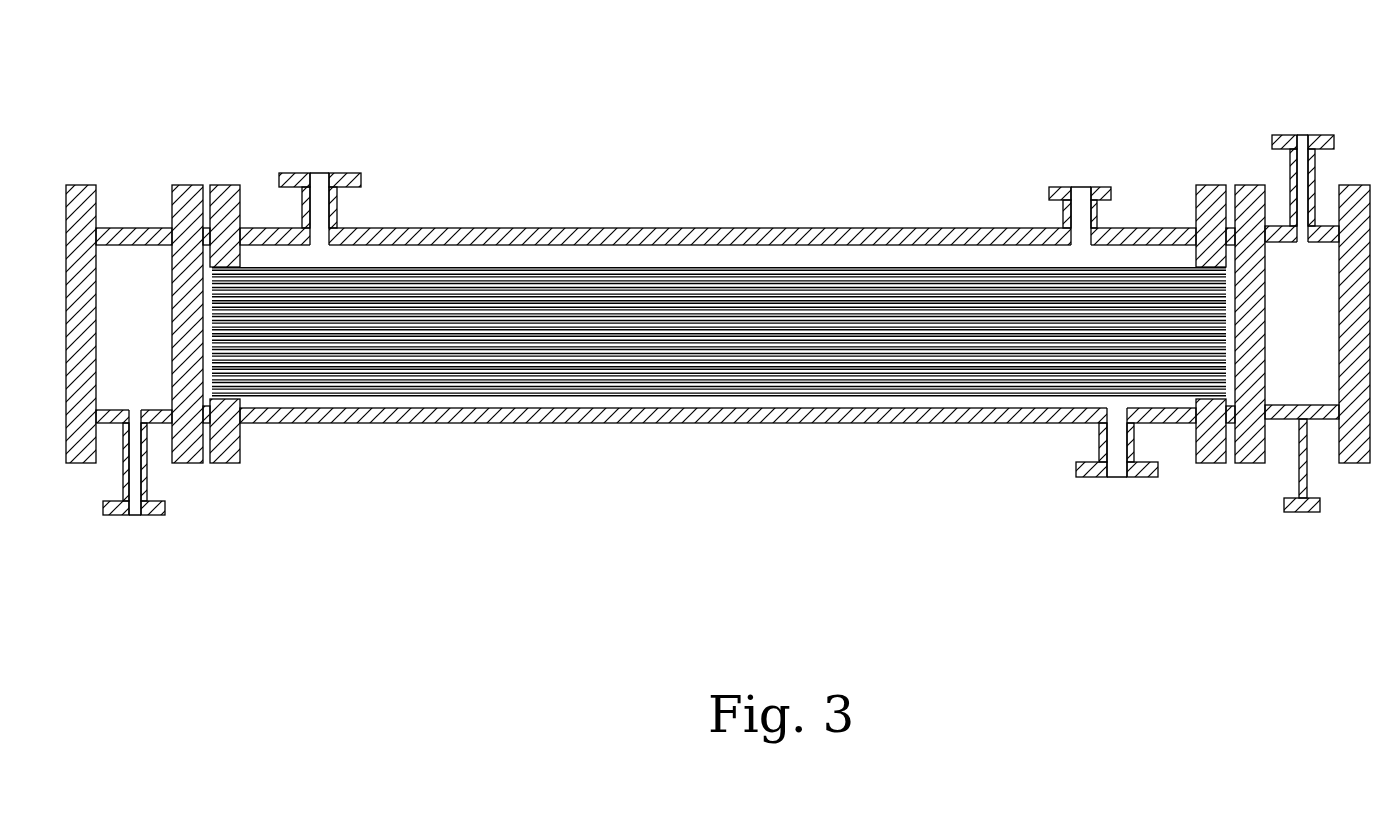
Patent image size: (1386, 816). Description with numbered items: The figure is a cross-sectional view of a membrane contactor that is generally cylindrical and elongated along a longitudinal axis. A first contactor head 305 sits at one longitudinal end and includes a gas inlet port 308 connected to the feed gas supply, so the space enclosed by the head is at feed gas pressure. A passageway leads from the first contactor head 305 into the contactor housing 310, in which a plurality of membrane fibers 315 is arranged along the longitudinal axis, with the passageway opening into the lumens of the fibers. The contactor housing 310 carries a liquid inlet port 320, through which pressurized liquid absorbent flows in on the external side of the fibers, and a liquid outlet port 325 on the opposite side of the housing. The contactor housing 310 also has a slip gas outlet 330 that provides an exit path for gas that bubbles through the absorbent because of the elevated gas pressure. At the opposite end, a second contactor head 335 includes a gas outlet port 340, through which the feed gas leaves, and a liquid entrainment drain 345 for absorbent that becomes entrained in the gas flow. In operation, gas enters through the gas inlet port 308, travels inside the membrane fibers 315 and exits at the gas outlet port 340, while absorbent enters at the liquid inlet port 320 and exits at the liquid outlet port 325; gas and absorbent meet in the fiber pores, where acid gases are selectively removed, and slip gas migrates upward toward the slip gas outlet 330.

The first contactor head 305 is at (122, 228).
The gas inlet port 308 is at (132, 515).
The contactor housing 310 is at (473, 228).
The membrane fibers 315 is at (597, 403).
The liquid inlet port 320 is at (322, 173).
The liquid outlet port 325 is at (1113, 477).
The slip gas outlet 330 is at (1075, 187).
The second contactor head 335 is at (1280, 223).
The gas outlet port 340 is at (1300, 135).
The liquid entrainment drain 345 is at (1300, 512).